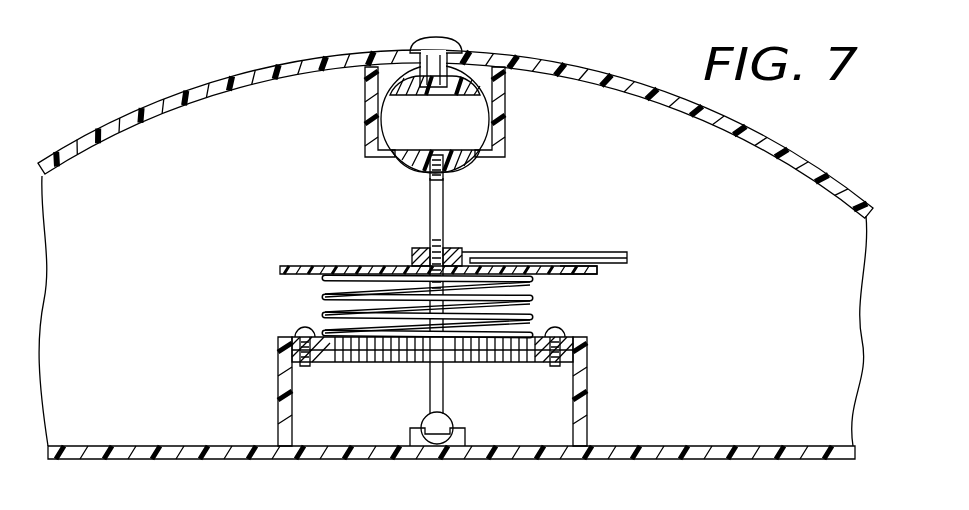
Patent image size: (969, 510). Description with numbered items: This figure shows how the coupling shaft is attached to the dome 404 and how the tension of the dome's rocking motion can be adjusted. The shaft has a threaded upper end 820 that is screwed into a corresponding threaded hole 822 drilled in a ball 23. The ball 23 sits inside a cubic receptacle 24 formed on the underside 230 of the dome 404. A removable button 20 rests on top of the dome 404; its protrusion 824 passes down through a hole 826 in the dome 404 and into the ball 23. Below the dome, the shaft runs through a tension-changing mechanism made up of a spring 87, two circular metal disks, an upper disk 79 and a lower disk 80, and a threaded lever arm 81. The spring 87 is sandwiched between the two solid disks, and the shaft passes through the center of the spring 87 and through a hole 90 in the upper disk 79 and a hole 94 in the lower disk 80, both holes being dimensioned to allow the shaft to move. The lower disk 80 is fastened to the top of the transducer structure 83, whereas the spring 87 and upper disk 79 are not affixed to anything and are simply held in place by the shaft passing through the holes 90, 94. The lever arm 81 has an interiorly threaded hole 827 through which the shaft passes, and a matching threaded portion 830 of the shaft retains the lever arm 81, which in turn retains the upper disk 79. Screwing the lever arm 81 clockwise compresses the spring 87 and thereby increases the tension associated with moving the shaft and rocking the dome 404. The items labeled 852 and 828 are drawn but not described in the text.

The removable button 20 is at (440, 37).
The hole 826 is at (470, 62).
The dome 404 is at (195, 92).
The underside 230 is at (133, 128).
The socket cap 852 is at (378, 113).
The cubic receptacle 24 is at (504, 110).
The protrusion 824 is at (435, 119).
The threaded hole 822 is at (420, 163).
The ball 23 is at (465, 162).
The threaded upper end 820 is at (445, 175).
The threaded portion 830 is at (430, 237).
The hole 90 is at (403, 273).
The hole 827 is at (447, 245).
The lever arm 81 is at (587, 251).
The upper disk 79 is at (580, 275).
The spring 87 is at (533, 318).
The lower disk 80 is at (580, 343).
The transducer structure 83 is at (620, 382).
The hole 94 is at (490, 357).
The ball end 828 is at (425, 387).